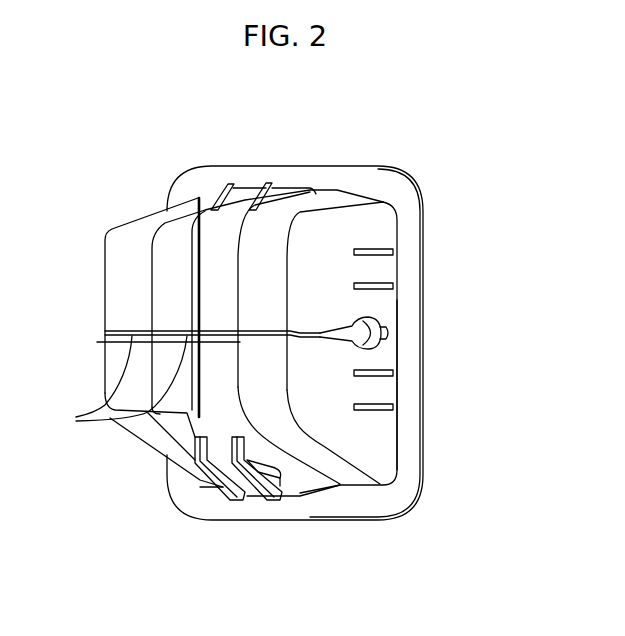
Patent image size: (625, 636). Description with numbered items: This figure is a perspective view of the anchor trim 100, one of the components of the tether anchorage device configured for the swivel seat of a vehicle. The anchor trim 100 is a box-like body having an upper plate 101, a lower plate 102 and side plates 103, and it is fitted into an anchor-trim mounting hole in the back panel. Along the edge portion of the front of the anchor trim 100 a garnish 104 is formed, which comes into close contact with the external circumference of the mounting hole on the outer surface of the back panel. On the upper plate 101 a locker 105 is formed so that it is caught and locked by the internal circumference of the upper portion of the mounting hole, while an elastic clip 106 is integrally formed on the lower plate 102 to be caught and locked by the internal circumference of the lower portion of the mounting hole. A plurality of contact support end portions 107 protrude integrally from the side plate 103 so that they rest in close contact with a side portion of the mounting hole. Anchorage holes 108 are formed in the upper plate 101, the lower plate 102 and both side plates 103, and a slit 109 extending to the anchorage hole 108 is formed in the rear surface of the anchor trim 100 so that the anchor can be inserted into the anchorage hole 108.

The anchor trim 100 is at (412, 162).
The upper plate 101 is at (290, 202).
The lower plate 102 is at (322, 490).
The side plate 103 is at (380, 433).
The garnish 104 is at (424, 364).
The locker 105 is at (272, 192).
The elastic clip 106 is at (278, 503).
The contact support end portions 107 is at (377, 284).
The anchorage hole 108 is at (389, 333).
The slit 109 is at (135, 420).